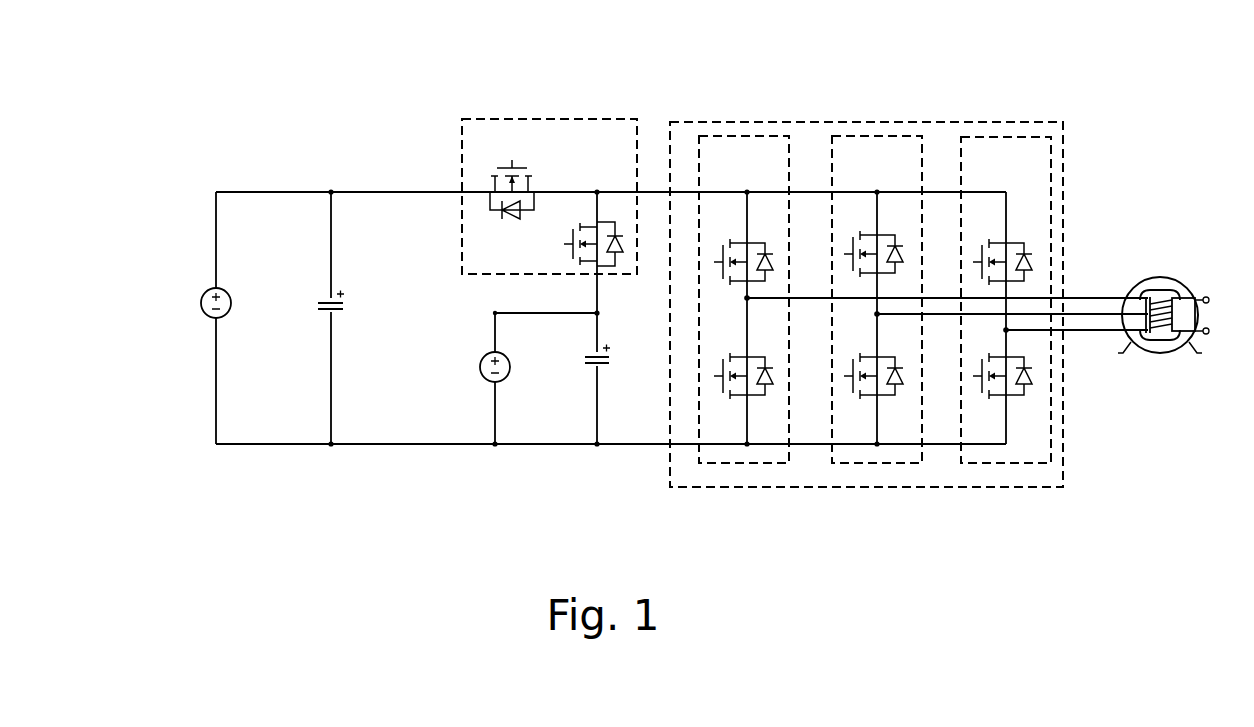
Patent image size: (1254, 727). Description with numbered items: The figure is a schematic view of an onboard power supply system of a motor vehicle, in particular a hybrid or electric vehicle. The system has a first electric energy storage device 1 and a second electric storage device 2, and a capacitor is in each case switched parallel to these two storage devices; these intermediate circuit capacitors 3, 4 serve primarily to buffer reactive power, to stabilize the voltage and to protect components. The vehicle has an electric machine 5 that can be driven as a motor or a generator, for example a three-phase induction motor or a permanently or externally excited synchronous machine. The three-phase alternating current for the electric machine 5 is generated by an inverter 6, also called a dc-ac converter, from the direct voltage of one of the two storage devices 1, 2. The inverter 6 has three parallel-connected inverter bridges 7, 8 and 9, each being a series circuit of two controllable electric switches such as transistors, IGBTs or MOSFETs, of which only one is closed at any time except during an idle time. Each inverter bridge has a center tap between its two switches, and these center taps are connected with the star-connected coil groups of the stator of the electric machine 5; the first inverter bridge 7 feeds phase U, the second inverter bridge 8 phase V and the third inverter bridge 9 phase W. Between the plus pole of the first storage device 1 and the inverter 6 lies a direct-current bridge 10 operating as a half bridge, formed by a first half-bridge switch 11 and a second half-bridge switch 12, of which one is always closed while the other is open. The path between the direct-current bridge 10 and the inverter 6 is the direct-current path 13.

The first electric energy storage device 1 is at (201, 303).
The second electric storage device 2 is at (492, 355).
The intermediate circuit capacitor 3 is at (330, 303).
The intermediate circuit capacitor 4 is at (594, 355).
The electric machine 5 is at (1112, 341).
The inverter 6 is at (866, 304).
The first inverter bridge 7 is at (744, 299).
The second inverter bridge 8 is at (877, 299).
The third inverter bridge 9 is at (1006, 300).
The direct-current bridge 10 is at (549, 196).
The first half-bridge switch 11 is at (490, 175).
The second half-bridge switch 12 is at (587, 222).
The direct-current path 13 is at (659, 192).